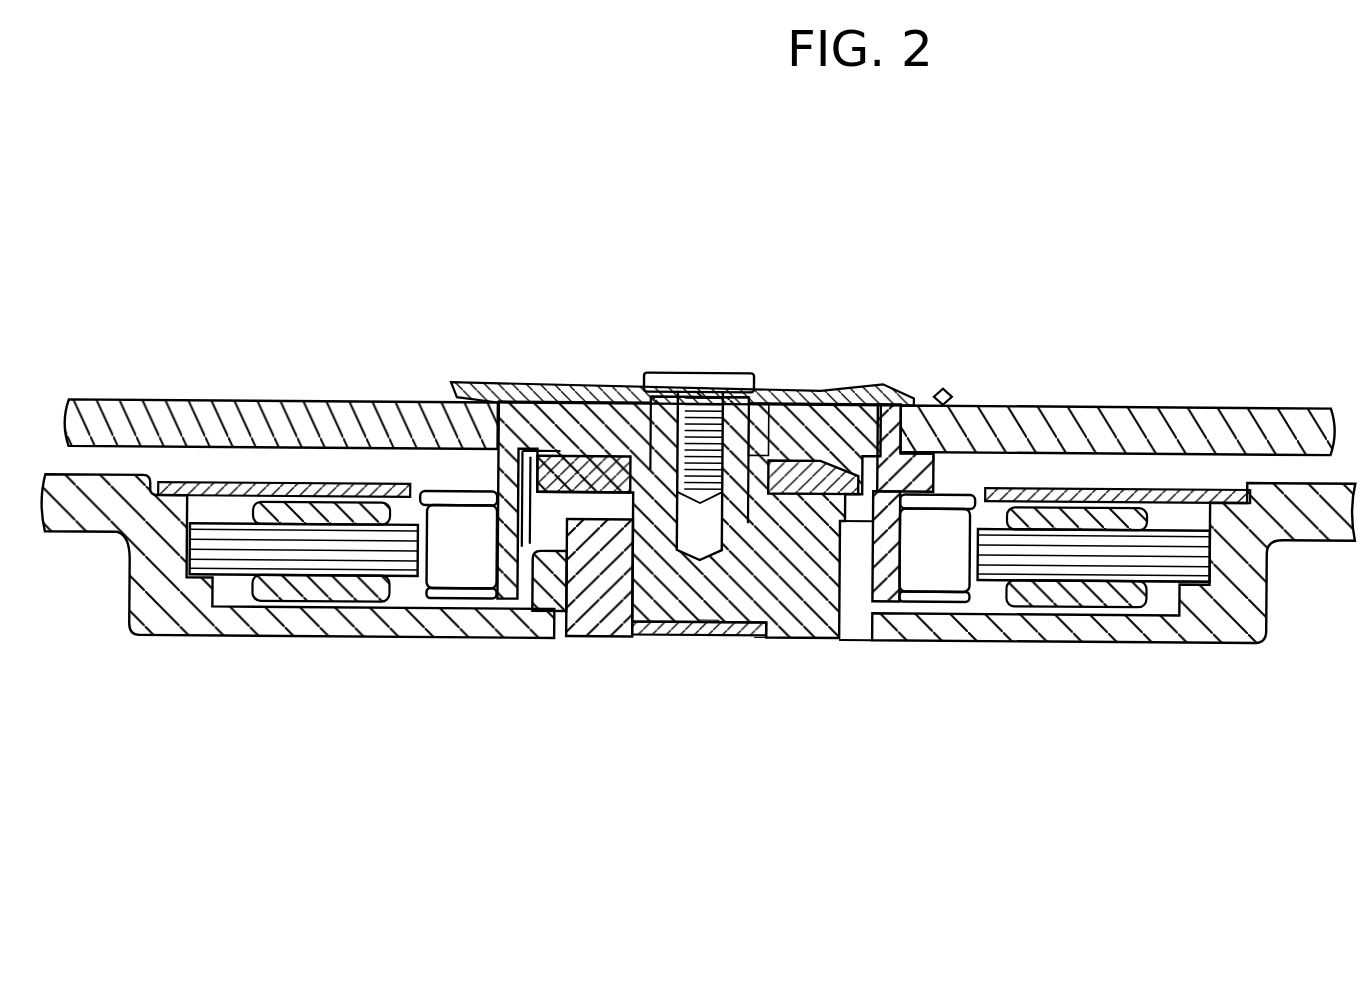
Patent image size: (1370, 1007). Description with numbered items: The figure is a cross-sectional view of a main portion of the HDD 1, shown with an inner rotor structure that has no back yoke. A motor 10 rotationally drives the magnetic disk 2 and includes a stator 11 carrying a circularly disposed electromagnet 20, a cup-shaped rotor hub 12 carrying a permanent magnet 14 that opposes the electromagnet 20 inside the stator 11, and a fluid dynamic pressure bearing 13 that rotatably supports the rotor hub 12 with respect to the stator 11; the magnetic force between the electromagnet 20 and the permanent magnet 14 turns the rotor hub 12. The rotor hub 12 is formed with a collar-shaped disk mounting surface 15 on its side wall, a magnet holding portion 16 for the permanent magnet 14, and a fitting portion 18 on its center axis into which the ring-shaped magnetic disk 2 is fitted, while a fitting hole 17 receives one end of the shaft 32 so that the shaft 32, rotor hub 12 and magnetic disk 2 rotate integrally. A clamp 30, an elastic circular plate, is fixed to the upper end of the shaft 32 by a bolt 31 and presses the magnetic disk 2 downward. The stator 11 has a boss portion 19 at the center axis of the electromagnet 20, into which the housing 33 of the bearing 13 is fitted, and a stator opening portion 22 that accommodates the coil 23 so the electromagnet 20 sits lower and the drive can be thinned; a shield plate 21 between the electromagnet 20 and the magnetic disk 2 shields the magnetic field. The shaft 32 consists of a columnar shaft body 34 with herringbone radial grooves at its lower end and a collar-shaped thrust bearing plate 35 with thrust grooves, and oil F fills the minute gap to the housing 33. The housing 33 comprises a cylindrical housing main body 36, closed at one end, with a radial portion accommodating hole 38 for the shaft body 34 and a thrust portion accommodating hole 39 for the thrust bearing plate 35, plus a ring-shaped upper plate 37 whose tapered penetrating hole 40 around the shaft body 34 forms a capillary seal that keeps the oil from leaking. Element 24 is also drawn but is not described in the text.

The HDD 1 is at (832, 245).
The magnetic disk 2 is at (1240, 405).
The motor 10 is at (842, 352).
The stator 11 is at (1265, 636).
The rotor hub 12 is at (880, 415).
The fluid dynamic pressure bearing 13 is at (705, 680).
The permanent magnet 14 is at (940, 575).
The disk mounting surface 15 is at (940, 455).
The magnet holding portion 16 is at (890, 580).
The fitting hole 17 is at (735, 410).
The fitting portion 18 is at (936, 392).
The boss portion 19 is at (843, 540).
The electromagnet 20 is at (1055, 690).
The shield plate 21 is at (1145, 490).
The stator opening portion 22 is at (995, 600).
The coil 23 is at (1120, 605).
The coil wire 24 is at (1160, 578).
The clamp 30 is at (500, 385).
The bolt 31 is at (690, 373).
The shaft 32 is at (722, 325).
The housing 33 is at (765, 680).
The shaft body 34 is at (656, 410).
The thrust bearing plate 35 is at (583, 500).
The housing main body 36 is at (606, 600).
The upper plate 37 is at (800, 470).
The radial portion accommodating hole 38 is at (652, 590).
The thrust portion accommodating hole 39 is at (575, 525).
The penetrating hole 40 is at (620, 455).